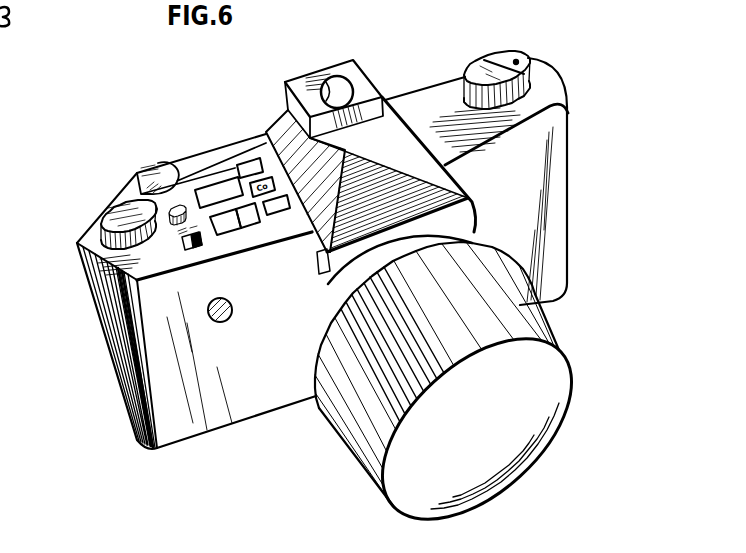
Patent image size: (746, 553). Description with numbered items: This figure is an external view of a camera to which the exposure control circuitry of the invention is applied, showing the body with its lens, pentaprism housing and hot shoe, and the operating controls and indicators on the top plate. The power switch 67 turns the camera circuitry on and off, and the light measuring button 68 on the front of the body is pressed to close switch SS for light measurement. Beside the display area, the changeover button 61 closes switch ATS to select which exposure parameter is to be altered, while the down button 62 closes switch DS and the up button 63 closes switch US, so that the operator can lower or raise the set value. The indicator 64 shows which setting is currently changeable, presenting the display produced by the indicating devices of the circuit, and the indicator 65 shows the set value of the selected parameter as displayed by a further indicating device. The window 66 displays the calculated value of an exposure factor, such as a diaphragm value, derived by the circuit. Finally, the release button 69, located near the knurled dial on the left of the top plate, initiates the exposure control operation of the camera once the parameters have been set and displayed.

The changeover button 61 is at (277, 213).
The down button 62 is at (248, 158).
The up button 63 is at (213, 185).
The indicator 64 is at (246, 226).
The indicator 65 is at (225, 237).
The window 66 is at (185, 151).
The power switch 67 is at (192, 252).
The light measuring button 68 is at (229, 320).
The release button 69 is at (172, 212).